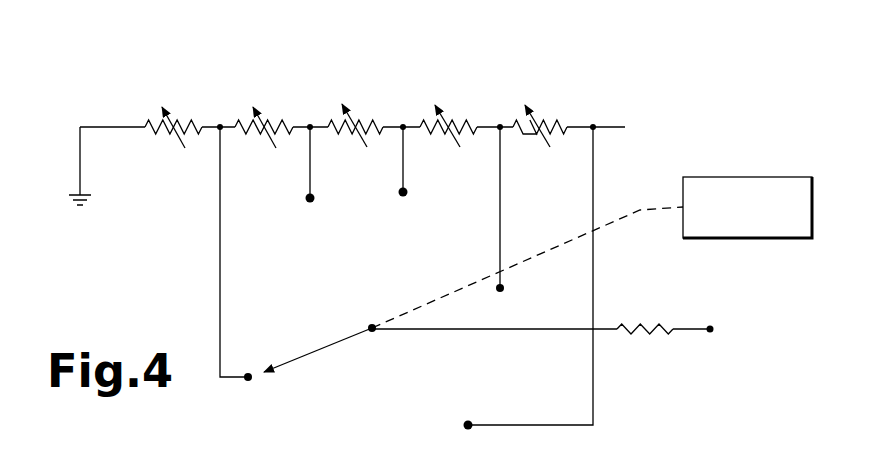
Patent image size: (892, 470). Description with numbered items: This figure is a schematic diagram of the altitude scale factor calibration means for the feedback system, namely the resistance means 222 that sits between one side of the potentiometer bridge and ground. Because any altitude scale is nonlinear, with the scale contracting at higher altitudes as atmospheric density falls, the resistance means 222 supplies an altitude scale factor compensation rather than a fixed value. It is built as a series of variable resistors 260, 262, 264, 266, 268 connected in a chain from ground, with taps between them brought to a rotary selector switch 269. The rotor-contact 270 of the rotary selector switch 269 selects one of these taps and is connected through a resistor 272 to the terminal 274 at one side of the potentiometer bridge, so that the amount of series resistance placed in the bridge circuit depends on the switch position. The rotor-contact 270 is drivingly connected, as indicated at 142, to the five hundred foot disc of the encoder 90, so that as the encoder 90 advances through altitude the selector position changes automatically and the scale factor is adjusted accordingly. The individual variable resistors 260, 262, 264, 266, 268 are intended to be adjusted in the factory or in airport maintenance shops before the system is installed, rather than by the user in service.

The resistance means 222 is at (305, 72).
The variable resistor 260 is at (180, 122).
The variable resistor 262 is at (269, 122).
The variable resistor 264 is at (360, 120).
The variable resistor 266 is at (452, 120).
The variable resistor 268 is at (546, 120).
The rotary selector switch 269 is at (178, 306).
The rotor-contact 270 is at (318, 350).
The resistor 272 is at (640, 325).
The terminal 274 is at (713, 324).
The driving connection 142 is at (628, 214).
The encoder 90 is at (757, 177).